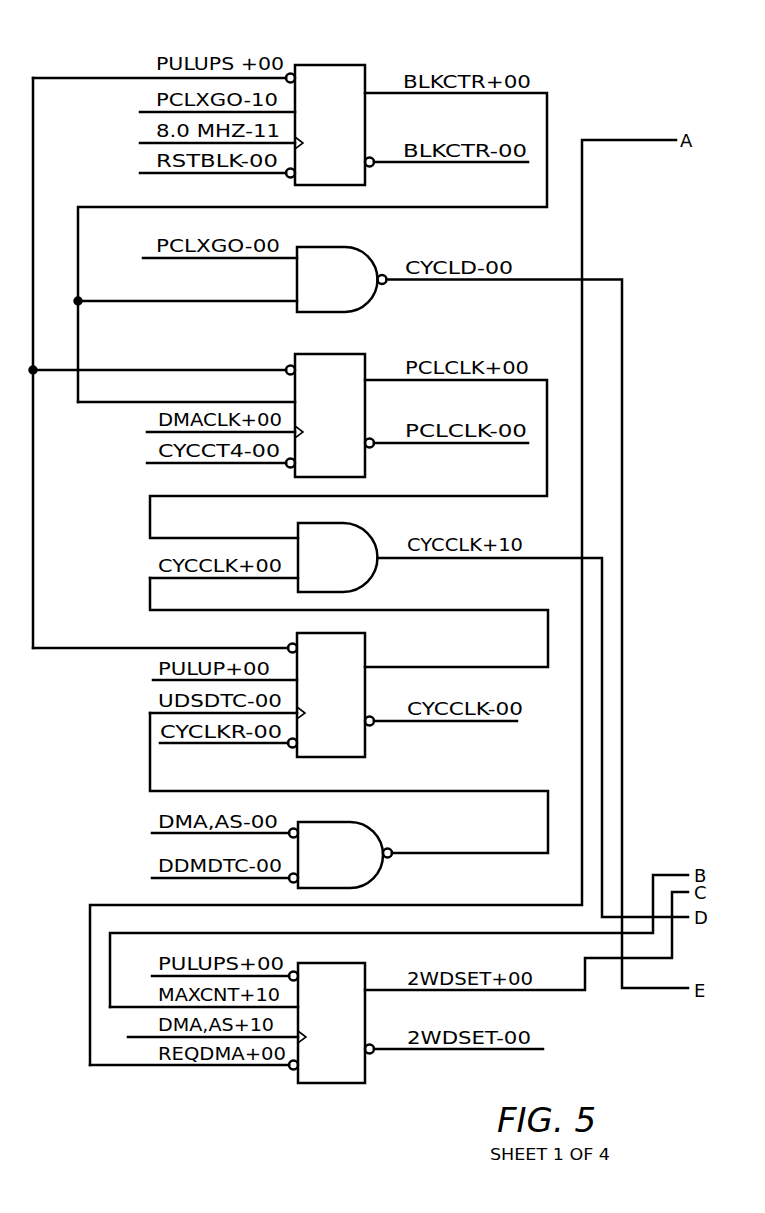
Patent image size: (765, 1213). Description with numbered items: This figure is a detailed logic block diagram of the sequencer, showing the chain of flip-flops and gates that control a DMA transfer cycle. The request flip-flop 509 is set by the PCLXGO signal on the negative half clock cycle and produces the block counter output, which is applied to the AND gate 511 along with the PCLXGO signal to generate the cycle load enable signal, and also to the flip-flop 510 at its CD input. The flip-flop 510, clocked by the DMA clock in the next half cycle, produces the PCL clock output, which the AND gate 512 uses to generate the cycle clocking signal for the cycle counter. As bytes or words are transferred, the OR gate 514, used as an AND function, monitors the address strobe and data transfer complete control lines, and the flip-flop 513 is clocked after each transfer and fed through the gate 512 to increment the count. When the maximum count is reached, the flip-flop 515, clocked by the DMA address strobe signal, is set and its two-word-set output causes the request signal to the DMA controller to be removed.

The flip-flop 509 is at (343, 65).
The flip-flop 510 is at (353, 354).
The AND gate 511 is at (357, 250).
The AND gate 512 is at (365, 525).
The flip-flop 513 is at (365, 643).
The OR gate 514 is at (365, 828).
The flip-flop 515 is at (350, 967).